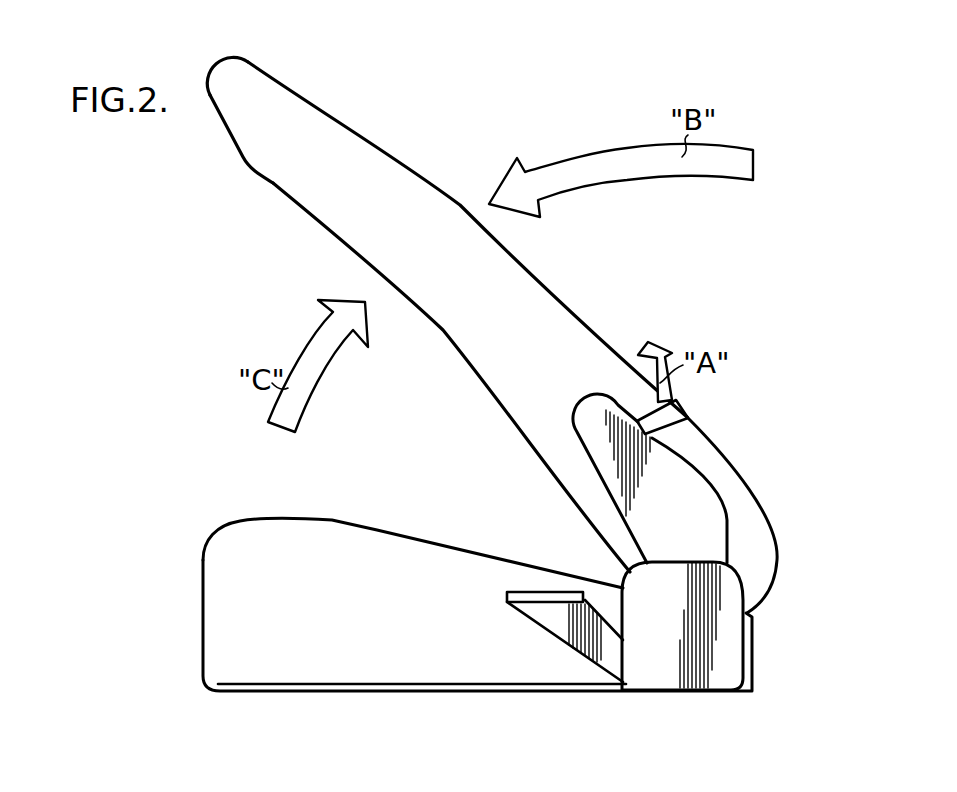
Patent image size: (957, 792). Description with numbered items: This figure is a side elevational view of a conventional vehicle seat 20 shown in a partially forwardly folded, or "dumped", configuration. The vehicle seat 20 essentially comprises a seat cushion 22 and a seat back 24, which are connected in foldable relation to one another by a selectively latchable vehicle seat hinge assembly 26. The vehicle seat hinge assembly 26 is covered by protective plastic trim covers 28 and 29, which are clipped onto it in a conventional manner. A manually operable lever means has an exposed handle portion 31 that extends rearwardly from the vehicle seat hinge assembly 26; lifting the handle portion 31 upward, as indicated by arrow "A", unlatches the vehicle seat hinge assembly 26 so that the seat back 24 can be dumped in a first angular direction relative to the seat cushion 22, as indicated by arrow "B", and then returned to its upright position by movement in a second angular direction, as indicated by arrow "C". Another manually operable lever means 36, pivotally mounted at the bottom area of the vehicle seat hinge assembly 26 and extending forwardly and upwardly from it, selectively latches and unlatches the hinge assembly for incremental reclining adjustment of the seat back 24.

The vehicle seat 20 is at (268, 293).
The seat cushion 22 is at (248, 545).
The seat back 24 is at (342, 142).
The vehicle seat hinge assembly 26 is at (602, 523).
The protective plastic trim cover 28 is at (707, 515).
The protective plastic trim cover 29 is at (720, 622).
The handle portion 31 is at (690, 418).
The manually operable lever means 36 is at (568, 616).